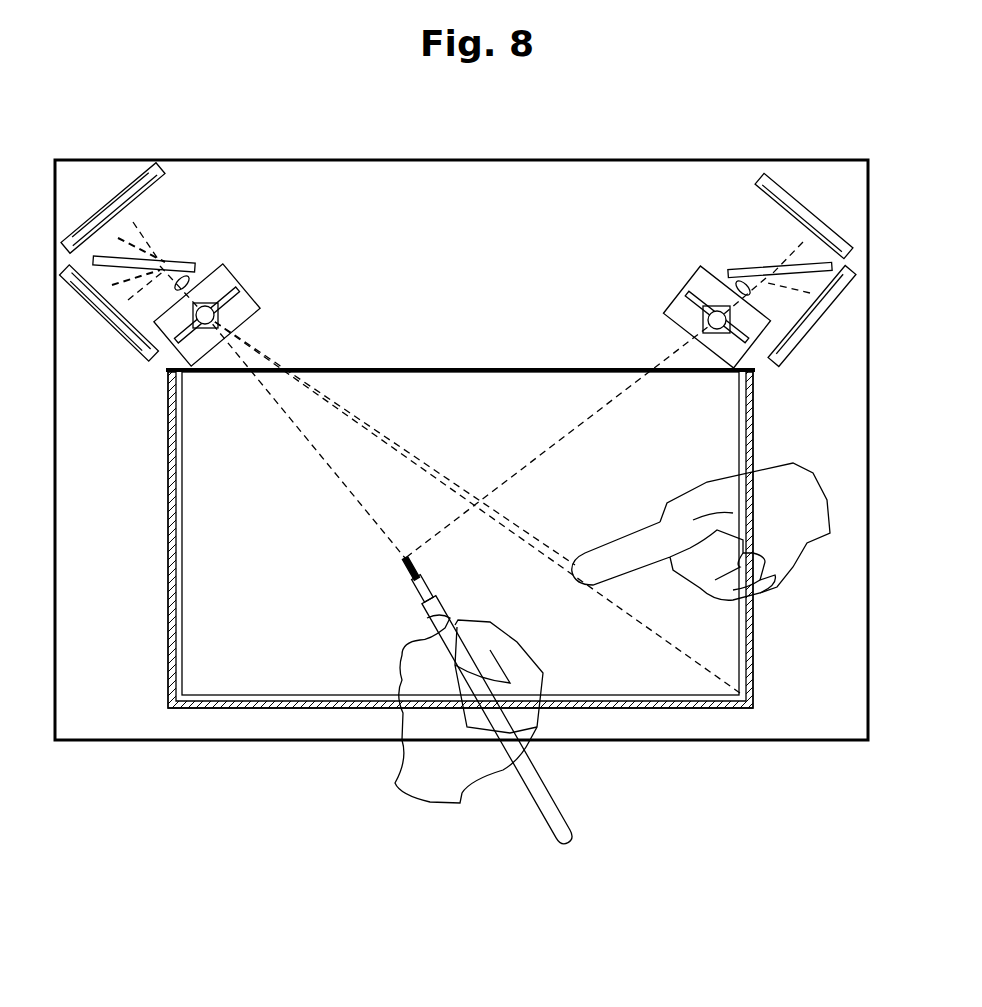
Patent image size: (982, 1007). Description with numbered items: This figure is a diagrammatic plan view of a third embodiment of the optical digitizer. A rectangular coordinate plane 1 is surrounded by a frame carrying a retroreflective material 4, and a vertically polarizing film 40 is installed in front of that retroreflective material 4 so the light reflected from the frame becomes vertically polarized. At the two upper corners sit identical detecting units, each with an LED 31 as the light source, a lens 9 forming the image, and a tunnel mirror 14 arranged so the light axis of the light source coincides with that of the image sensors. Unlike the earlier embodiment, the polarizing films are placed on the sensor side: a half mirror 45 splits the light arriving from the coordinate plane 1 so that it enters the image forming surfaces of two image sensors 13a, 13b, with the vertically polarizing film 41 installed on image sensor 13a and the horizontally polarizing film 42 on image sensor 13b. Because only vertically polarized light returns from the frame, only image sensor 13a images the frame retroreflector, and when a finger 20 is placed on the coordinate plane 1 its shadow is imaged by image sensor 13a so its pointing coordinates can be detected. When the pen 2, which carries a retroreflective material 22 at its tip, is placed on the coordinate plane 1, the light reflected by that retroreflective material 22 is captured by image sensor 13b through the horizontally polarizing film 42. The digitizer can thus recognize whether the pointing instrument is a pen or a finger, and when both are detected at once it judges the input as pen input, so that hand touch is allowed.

The coordinate plane 1 is at (197, 652).
The pen 2 is at (543, 810).
The retroreflective material 4 is at (680, 708).
The vertically polarizing film 40 is at (642, 702).
The lens 9 is at (173, 286).
The image sensor 13a is at (113, 212).
The image sensor 13b is at (112, 325).
The tunnel mirror 14 is at (238, 278).
The finger 20 is at (817, 505).
The retroreflective material 22 is at (405, 563).
The LED 31 is at (223, 312).
The vertically polarizing film 41 is at (162, 195).
The horizontally polarizing film 42 is at (138, 358).
The half mirror 45 is at (182, 262).